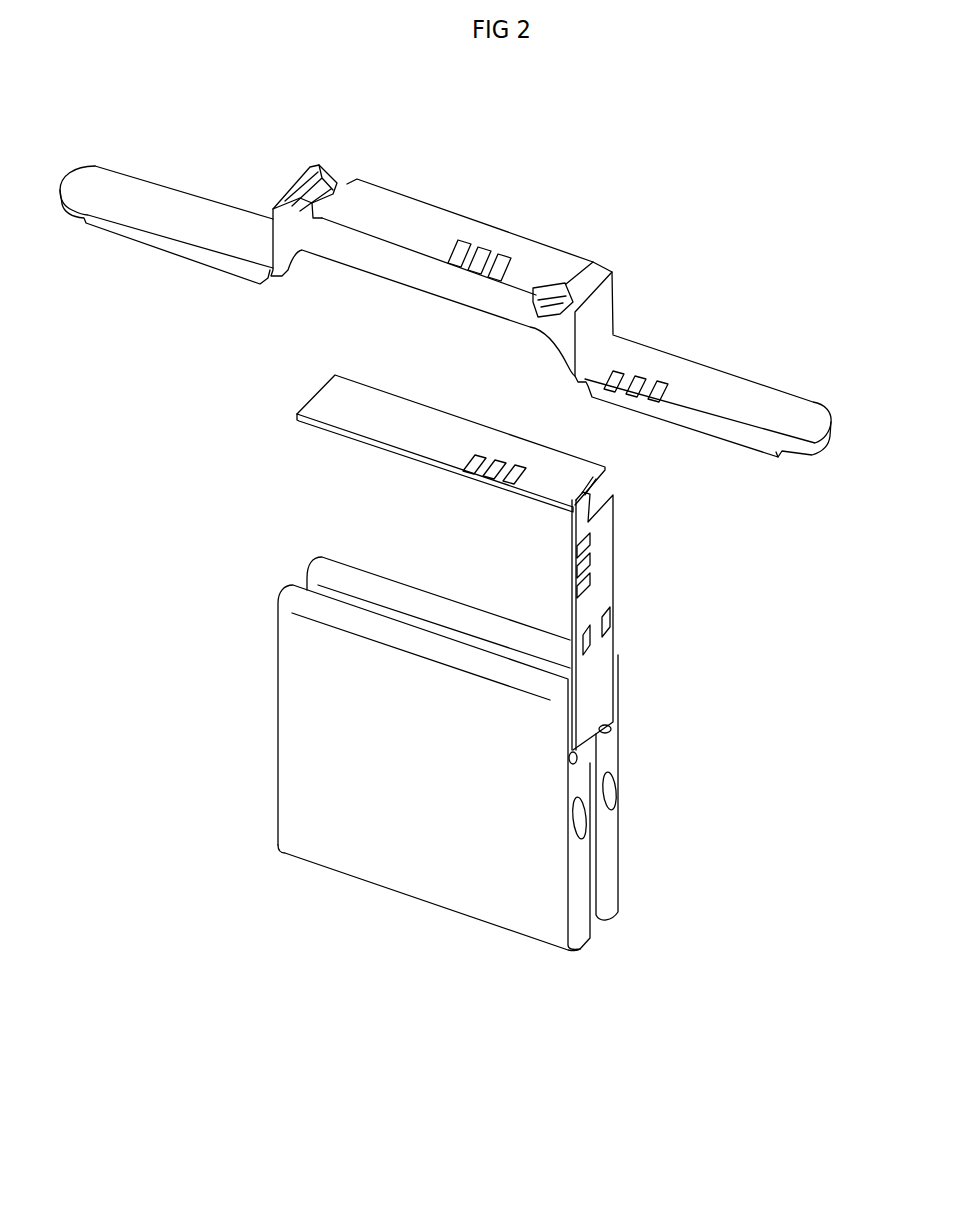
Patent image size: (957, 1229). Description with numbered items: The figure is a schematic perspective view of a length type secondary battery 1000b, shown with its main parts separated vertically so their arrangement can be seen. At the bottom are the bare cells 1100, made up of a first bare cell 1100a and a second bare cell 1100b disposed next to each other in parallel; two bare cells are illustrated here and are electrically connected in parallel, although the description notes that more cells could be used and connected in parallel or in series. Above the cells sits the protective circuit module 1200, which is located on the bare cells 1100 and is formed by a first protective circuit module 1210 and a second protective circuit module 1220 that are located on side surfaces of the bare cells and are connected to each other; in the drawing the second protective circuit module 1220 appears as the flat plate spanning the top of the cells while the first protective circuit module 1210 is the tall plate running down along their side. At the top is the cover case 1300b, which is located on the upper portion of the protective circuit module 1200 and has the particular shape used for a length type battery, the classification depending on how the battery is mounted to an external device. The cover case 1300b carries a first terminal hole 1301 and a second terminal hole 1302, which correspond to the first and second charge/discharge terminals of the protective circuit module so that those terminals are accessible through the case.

The length type secondary battery 1000b is at (750, 165).
The cover case 1300b is at (411, 212).
The first terminal hole 1301 is at (490, 250).
The second terminal hole 1302 is at (644, 372).
The protective circuit module 1200 is at (505, 420).
The second protective circuit module 1220 is at (378, 393).
The first protective circuit module 1210 is at (610, 545).
The bare cells 1100 is at (683, 990).
The first bare cell 1100a is at (583, 953).
The second bare cell 1100b is at (614, 915).